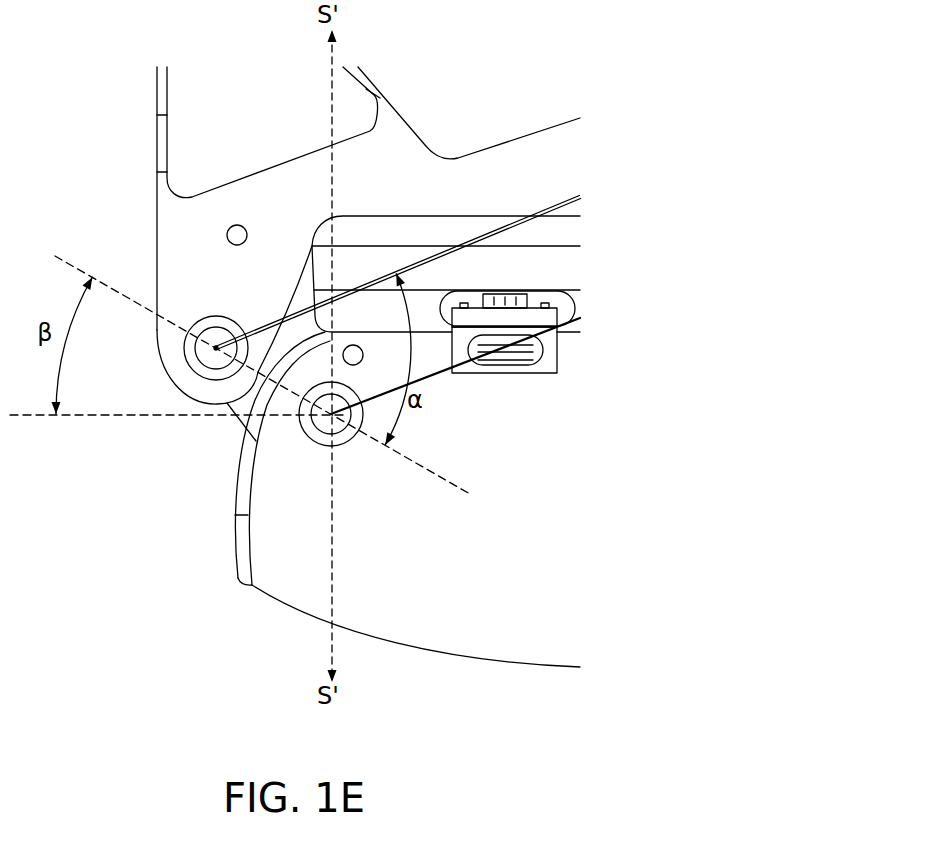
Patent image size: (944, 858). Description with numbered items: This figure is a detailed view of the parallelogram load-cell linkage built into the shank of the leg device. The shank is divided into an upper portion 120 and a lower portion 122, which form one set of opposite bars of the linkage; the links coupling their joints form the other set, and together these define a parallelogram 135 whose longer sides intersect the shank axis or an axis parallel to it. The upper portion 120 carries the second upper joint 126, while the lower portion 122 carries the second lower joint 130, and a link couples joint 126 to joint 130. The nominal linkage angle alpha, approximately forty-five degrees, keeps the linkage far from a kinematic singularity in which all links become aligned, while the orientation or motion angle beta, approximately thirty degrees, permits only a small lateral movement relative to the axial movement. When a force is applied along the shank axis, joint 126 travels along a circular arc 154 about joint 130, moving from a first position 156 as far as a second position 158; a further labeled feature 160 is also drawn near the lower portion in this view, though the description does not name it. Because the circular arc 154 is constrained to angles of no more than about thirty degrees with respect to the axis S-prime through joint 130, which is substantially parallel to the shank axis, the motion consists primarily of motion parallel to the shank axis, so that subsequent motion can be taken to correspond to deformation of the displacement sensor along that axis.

The upper portion 120 is at (155, 209).
The lower portion 122 is at (229, 578).
The second upper joint 126 is at (214, 310).
The second lower joint 130 is at (312, 458).
The parallelogram 135 is at (499, 224).
The circular arc 154 is at (184, 396).
The first position 156 is at (206, 345).
The second position 158 is at (183, 417).
The stop segment 160 is at (217, 421).